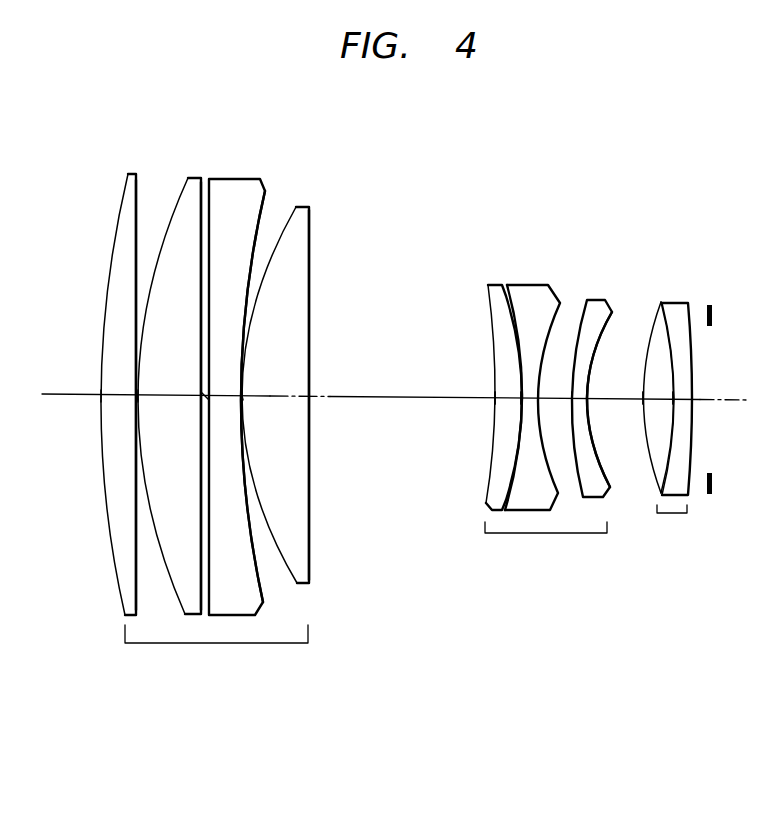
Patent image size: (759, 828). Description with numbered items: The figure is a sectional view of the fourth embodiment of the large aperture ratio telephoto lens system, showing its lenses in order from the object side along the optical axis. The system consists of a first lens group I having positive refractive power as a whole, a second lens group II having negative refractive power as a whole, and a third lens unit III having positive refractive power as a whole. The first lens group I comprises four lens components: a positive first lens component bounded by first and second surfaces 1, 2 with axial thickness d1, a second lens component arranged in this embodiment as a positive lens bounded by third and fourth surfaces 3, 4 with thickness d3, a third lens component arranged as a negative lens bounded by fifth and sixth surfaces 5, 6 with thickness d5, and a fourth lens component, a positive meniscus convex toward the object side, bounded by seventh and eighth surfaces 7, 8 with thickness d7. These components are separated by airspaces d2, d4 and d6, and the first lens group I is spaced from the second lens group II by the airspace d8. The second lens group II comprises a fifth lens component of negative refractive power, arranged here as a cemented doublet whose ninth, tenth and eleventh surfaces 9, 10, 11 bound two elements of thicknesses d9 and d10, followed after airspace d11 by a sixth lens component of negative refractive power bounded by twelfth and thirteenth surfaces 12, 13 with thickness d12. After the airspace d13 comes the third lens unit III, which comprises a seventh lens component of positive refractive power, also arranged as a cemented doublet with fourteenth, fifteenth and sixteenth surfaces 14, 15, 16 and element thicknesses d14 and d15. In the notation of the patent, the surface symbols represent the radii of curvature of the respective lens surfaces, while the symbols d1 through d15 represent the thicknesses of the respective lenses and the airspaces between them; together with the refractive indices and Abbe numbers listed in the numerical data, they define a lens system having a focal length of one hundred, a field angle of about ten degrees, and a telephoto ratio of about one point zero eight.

The radius of curvature of first lens surface 1 is at (125, 185).
The radius of curvature of second lens surface 2 is at (138, 188).
The radius of curvature of third lens surface 3 is at (177, 190).
The radius of curvature of fourth lens surface 4 is at (200, 187).
The radius of curvature of fifth lens surface 5 is at (212, 205).
The radius of curvature of sixth lens surface 6 is at (265, 192).
The radius of curvature of seventh lens surface 7 is at (295, 212).
The radius of curvature of eighth lens surface 8 is at (310, 233).
The radius of curvature of ninth lens surface 9 is at (488, 298).
The radius of curvature of tenth lens surface 10 is at (500, 287).
The radius of curvature of eleventh lens surface 11 is at (548, 320).
The radius of curvature of twelfth lens surface 12 is at (582, 302).
The radius of curvature of thirteenth lens surface 13 is at (610, 313).
The radius of curvature of fourteenth lens surface 14 is at (652, 312).
The radius of curvature of fifteenth lens surface 15 is at (667, 315).
The radius of curvature of sixteenth lens surface 16 is at (692, 312).
The thickness of first lens d1 is at (117, 397).
The airspace between first and second lens components d2 is at (136, 395).
The thickness of second lens d3 is at (163, 398).
The airspace between second and third lens components d4 is at (203, 390).
The thickness of third lens d5 is at (223, 398).
The airspace between third and fourth lens components d6 is at (242, 395).
The thickness of fourth lens d7 is at (277, 398).
The airspace between first and second lens groups d8 is at (415, 398).
The thickness of fifth lens d9 is at (508, 396).
The thickness of sixth lens d10 is at (530, 399).
The airspace between fifth and sixth lens components d11 is at (558, 397).
The thickness of seventh lens d12 is at (576, 400).
The airspace between second and third lens groups d13 is at (618, 397).
The thickness of eighth lens d14 is at (660, 400).
The thickness of ninth lens d15 is at (693, 427).
The first lens group I is at (209, 650).
The second lens group II is at (546, 543).
The third lens unit III is at (672, 522).